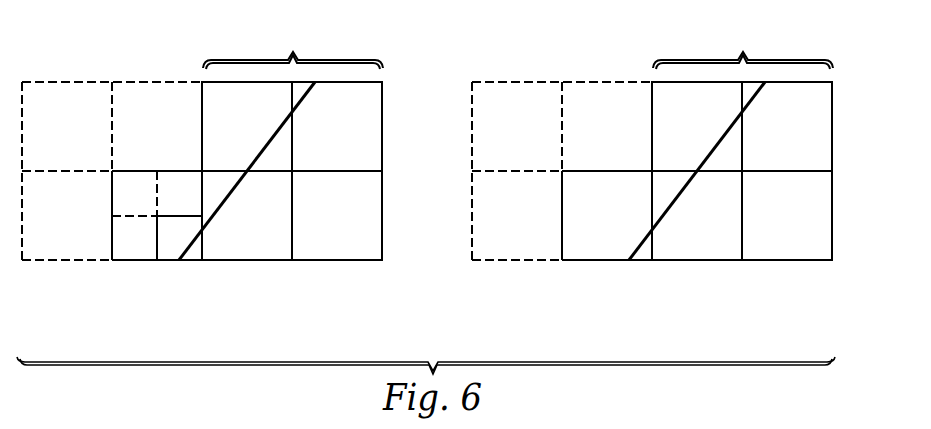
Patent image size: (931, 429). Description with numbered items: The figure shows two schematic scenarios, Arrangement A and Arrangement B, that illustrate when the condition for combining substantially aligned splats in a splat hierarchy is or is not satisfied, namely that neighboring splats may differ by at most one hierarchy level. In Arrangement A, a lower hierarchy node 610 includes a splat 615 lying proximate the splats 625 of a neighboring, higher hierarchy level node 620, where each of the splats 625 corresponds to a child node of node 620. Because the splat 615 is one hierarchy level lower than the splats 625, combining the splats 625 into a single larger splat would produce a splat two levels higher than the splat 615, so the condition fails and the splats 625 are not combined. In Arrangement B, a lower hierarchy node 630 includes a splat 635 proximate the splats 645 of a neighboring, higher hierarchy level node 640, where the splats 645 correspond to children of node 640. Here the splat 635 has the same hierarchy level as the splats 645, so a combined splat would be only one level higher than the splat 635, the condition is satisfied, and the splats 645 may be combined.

The lower hierarchy node 610 is at (202, 185).
The splat 615 is at (195, 250).
The higher hierarchy level node 620 is at (292, 142).
The splats 625 is at (263, 147).
The lower hierarchy node 630 is at (652, 185).
The splat 635 is at (640, 247).
The higher hierarchy level node 640 is at (742, 142).
The splats 645 is at (713, 147).